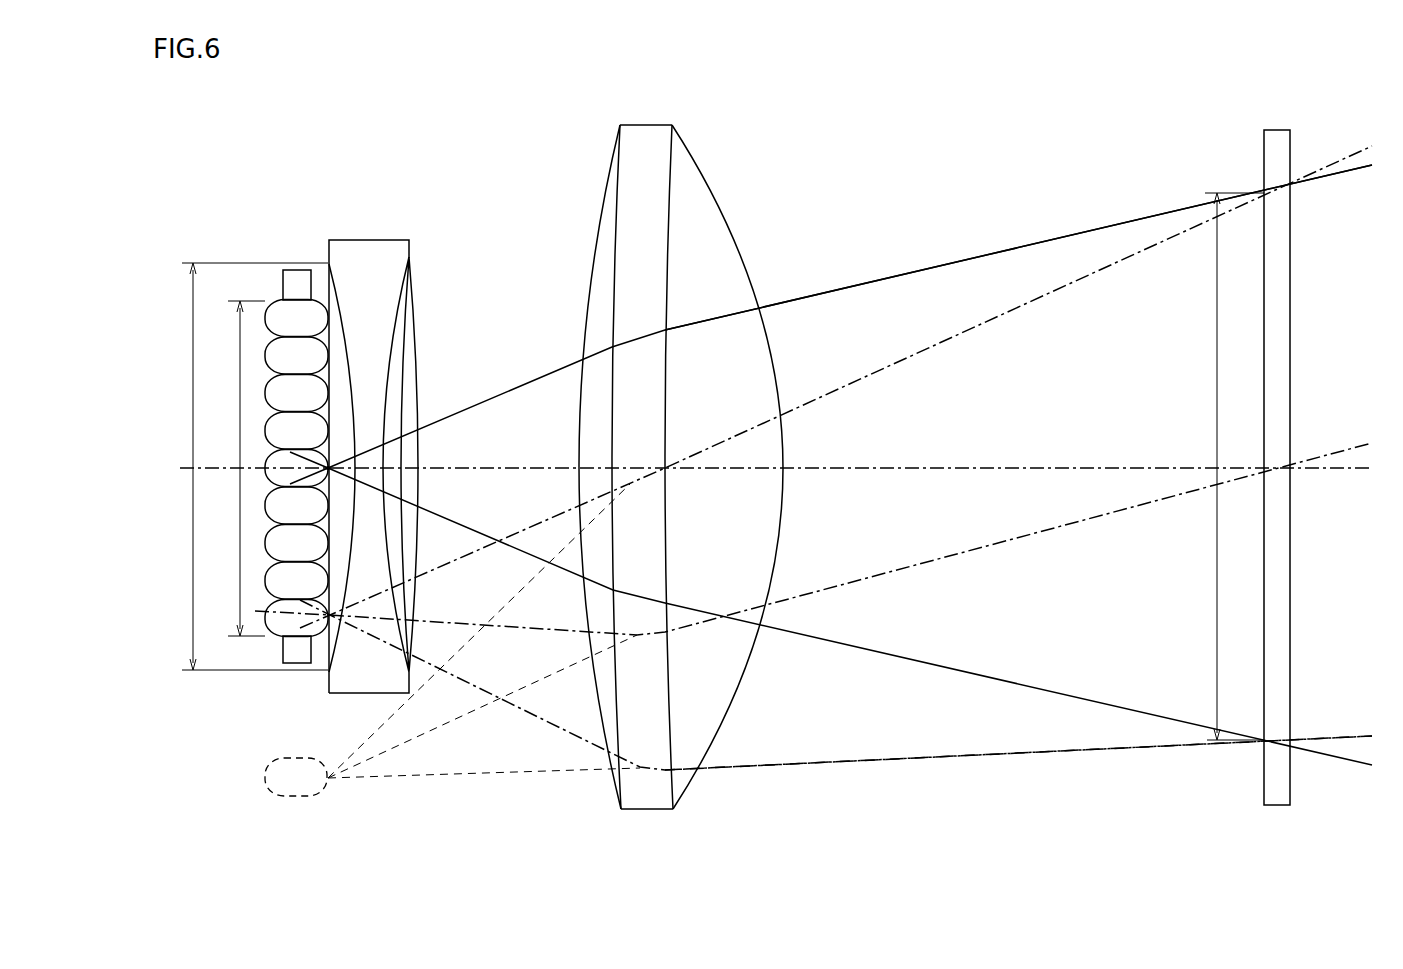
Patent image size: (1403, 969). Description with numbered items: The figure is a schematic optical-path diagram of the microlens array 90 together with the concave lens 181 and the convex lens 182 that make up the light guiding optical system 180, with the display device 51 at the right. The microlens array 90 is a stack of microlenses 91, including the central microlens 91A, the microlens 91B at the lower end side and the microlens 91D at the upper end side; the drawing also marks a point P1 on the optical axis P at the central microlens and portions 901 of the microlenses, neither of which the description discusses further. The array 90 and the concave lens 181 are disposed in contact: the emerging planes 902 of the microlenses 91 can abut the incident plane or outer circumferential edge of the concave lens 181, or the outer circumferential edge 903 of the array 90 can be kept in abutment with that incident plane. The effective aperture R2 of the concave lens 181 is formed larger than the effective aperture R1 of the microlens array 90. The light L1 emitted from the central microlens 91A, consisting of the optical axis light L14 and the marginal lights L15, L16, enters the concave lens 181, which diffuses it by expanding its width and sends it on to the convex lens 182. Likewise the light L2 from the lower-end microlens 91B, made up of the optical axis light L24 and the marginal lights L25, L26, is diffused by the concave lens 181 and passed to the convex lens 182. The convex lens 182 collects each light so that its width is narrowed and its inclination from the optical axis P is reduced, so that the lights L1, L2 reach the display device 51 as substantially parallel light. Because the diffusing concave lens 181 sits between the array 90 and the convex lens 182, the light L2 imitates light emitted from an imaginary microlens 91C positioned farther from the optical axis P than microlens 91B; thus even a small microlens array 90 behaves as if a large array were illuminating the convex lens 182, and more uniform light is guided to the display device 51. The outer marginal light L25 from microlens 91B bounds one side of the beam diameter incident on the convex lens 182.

The display device 51 is at (1270, 130).
The microlens array 90 is at (239, 452).
The microlenses 91 is at (229, 472).
The central microlens 91A is at (268, 455).
The microlens at lower end side 91B is at (272, 626).
The imaginary microlens 91C is at (293, 800).
The microlens at upper end side 91D is at (268, 305).
The light emitting portion 901 is at (229, 472).
The emerging planes 902 is at (333, 348).
The outer circumferential edge 903 is at (303, 268).
The light guiding optical system 180 is at (556, 449).
The concave lens 181 is at (413, 426).
The convex lens 182 is at (600, 205).
The light emission point P1 is at (236, 452).
The optical axis P is at (236, 479).
The effective aperture of microlens array R1 is at (235, 468).
The effective aperture of concave lens R2 is at (240, 466).
The light L1 is at (1023, 249).
The optical axis light L14 is at (1092, 463).
The marginal light L15 is at (1083, 693).
The marginal light L16 is at (1087, 233).
The light L2 is at (1033, 752).
The optical axis light L24 is at (1080, 521).
The outer marginal light L25 is at (973, 753).
The marginal light L26 is at (1077, 280).